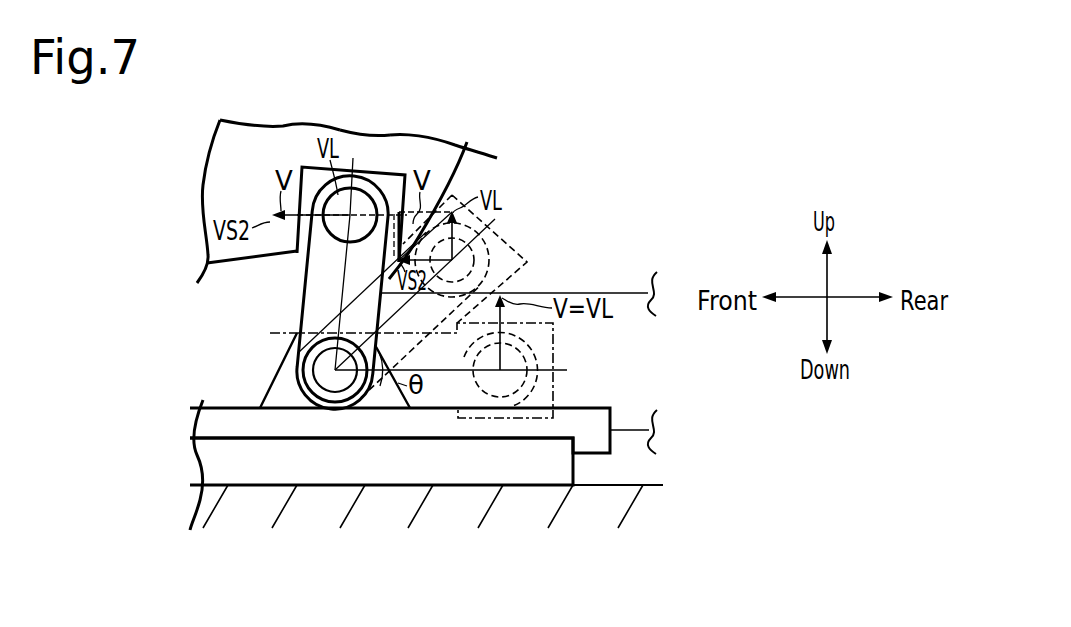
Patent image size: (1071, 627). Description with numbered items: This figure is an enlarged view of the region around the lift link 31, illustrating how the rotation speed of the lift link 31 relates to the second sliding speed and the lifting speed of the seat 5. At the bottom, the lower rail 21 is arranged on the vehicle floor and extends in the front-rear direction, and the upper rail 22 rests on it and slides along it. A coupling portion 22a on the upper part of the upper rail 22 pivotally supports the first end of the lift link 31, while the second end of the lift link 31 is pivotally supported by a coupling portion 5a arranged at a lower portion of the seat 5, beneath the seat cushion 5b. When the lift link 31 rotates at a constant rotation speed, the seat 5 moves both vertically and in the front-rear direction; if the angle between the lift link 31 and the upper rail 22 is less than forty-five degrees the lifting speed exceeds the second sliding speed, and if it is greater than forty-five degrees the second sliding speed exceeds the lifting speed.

The seat 5 is at (248, 152).
The coupling portion 5a is at (387, 183).
The seat cushion 5b is at (355, 148).
The lift link 31 is at (322, 283).
The coupling portion 22a is at (276, 369).
The upper rail 22 is at (348, 425).
The lower rail 21 is at (273, 465).